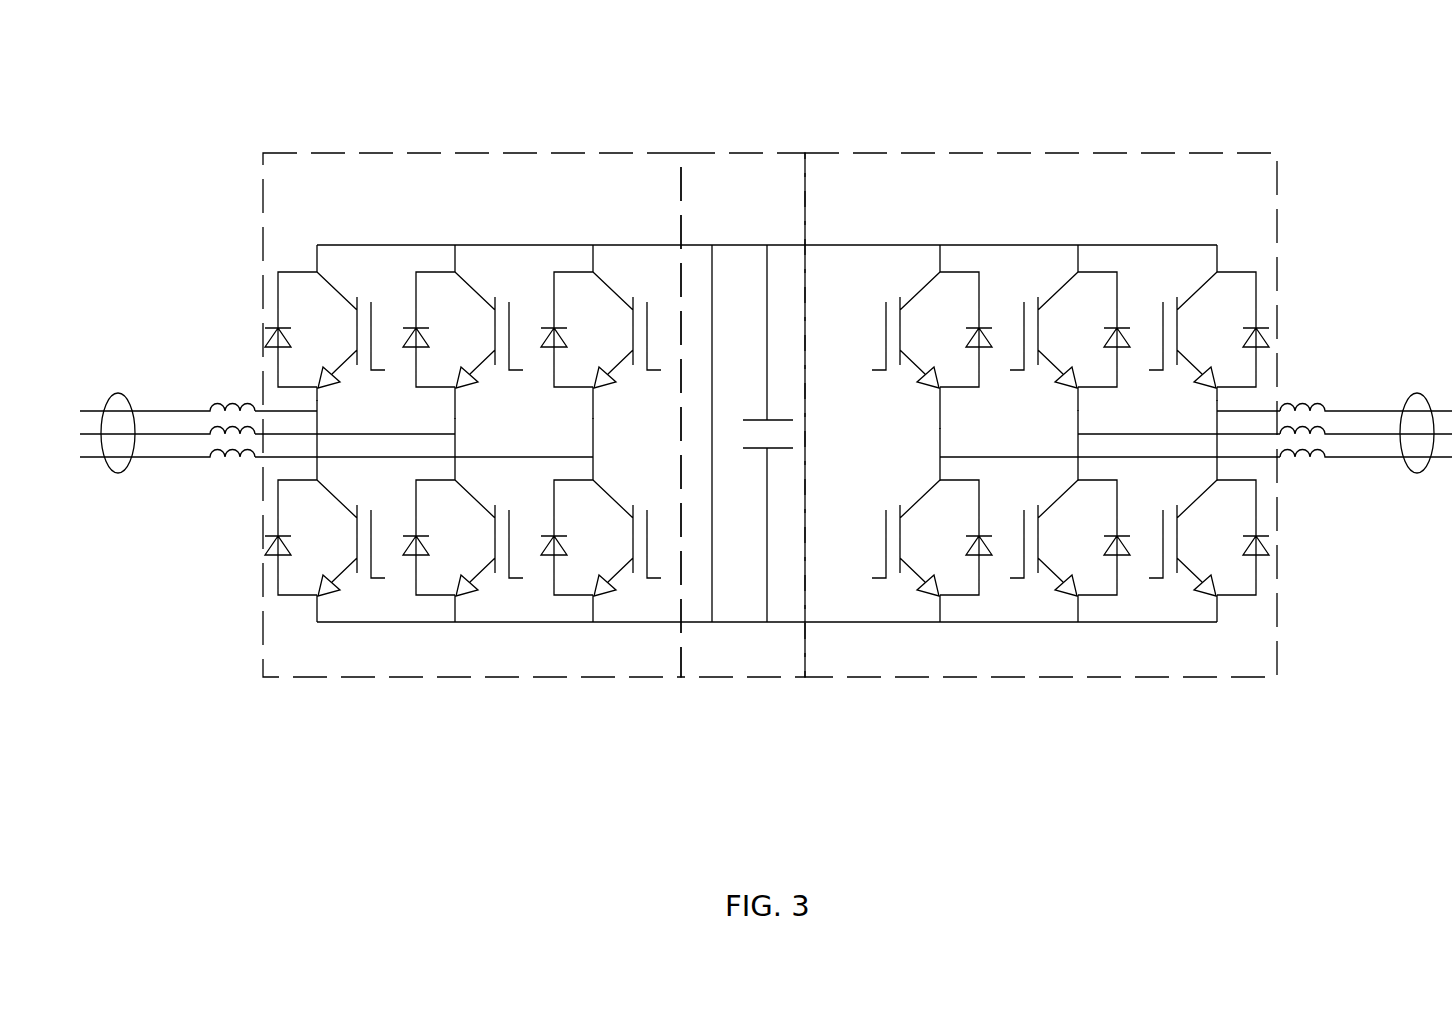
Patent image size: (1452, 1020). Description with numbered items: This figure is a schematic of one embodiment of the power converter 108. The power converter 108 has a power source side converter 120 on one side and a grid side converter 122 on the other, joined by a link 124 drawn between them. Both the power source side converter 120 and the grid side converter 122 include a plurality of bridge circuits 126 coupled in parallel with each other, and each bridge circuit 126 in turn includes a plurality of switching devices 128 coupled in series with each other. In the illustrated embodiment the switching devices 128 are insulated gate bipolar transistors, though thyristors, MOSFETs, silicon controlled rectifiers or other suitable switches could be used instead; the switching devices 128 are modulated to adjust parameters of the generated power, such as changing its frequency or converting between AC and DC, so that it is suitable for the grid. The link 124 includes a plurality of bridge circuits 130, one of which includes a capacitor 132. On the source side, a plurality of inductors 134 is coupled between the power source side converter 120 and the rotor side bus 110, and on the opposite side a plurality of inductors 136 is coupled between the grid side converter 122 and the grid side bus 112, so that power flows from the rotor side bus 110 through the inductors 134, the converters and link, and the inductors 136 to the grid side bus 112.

The power converter 108 is at (245, 98).
The rotor side bus 110 is at (118, 473).
The grid side bus 112 is at (1417, 473).
The power source side converter 120 is at (330, 191).
The grid side converter 122 is at (1257, 191).
The link 124 is at (769, 191).
The bridge circuit 126 is at (595, 418).
The switching device 128 is at (351, 283).
The bridge circuit 130 is at (767, 528).
The capacitor 132 is at (778, 420).
The inductor 134 is at (232, 453).
The inductor 136 is at (1306, 453).